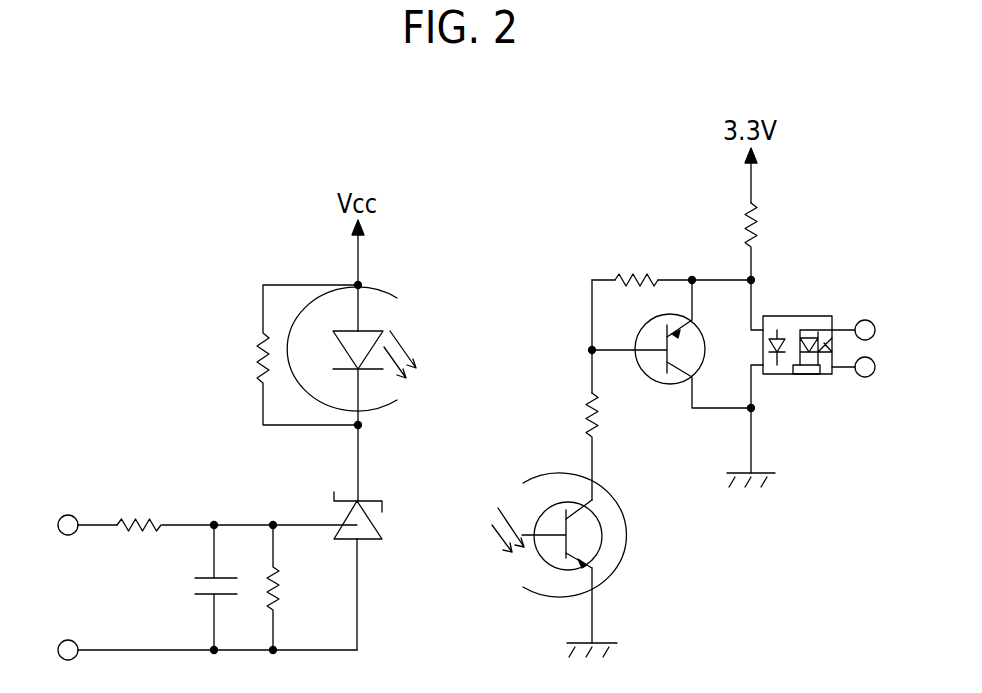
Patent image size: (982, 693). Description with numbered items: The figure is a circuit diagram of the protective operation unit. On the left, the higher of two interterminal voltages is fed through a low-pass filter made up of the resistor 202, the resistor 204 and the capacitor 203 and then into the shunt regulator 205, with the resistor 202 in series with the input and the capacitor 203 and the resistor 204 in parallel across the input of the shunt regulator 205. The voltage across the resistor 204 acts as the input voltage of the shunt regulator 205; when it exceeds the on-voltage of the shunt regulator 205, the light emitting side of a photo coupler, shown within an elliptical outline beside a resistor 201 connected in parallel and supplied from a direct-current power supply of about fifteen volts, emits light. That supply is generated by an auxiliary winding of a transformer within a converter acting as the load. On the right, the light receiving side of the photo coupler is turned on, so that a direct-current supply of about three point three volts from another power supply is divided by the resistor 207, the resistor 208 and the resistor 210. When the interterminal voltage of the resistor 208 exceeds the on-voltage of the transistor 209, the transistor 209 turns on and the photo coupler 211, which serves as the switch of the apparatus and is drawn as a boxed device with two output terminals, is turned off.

The resistor 201 is at (253, 357).
The resistor 202 is at (140, 516).
The capacitor 203 is at (192, 586).
The resistor 204 is at (284, 597).
The shunt regulator 205 is at (383, 529).
The resistor 207 is at (584, 416).
The resistor 208 is at (637, 269).
The transistor 209 is at (662, 385).
The resistor 210 is at (762, 224).
The photo coupler 211 is at (800, 315).